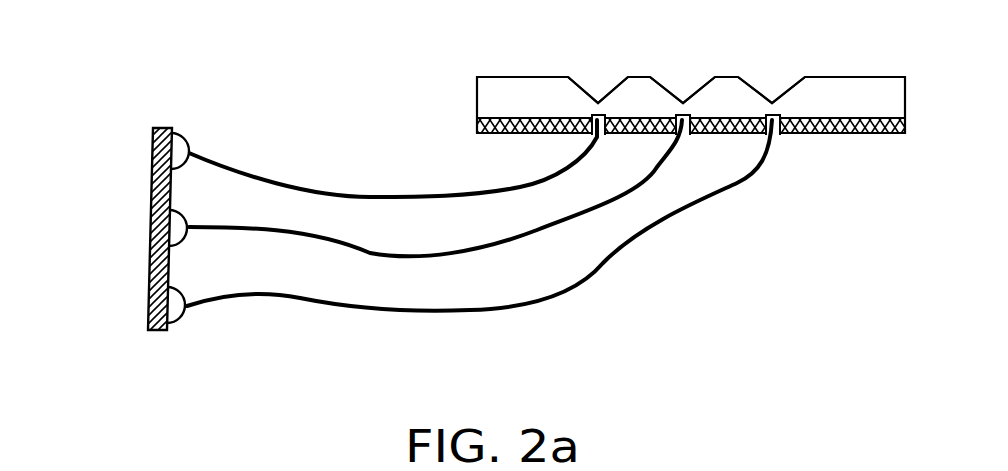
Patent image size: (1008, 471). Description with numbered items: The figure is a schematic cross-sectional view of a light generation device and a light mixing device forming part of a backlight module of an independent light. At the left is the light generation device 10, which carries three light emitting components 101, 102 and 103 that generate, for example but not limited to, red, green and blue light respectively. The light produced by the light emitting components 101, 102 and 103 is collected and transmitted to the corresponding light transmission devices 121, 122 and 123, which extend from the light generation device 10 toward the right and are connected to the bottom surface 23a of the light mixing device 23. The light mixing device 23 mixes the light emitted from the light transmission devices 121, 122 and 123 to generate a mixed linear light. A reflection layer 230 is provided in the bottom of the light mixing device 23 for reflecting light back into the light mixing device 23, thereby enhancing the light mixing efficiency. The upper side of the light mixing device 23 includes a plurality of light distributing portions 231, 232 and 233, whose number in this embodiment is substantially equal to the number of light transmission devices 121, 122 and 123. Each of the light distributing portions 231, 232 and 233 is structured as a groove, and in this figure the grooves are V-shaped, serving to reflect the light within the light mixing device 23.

The light generation device 10 is at (150, 267).
The light emitting component 101 is at (178, 143).
The light emitting component 102 is at (175, 225).
The light emitting component 103 is at (170, 312).
The light transmission device 121 is at (273, 180).
The light transmission device 122 is at (433, 263).
The light transmission device 123 is at (273, 297).
The light mixing device 23 is at (505, 88).
The reflection layer 230 is at (868, 138).
The light distributing portion 231 is at (617, 87).
The light distributing portion 232 is at (705, 87).
The light distributing portion 233 is at (757, 87).
The bottom surface 23a is at (778, 148).